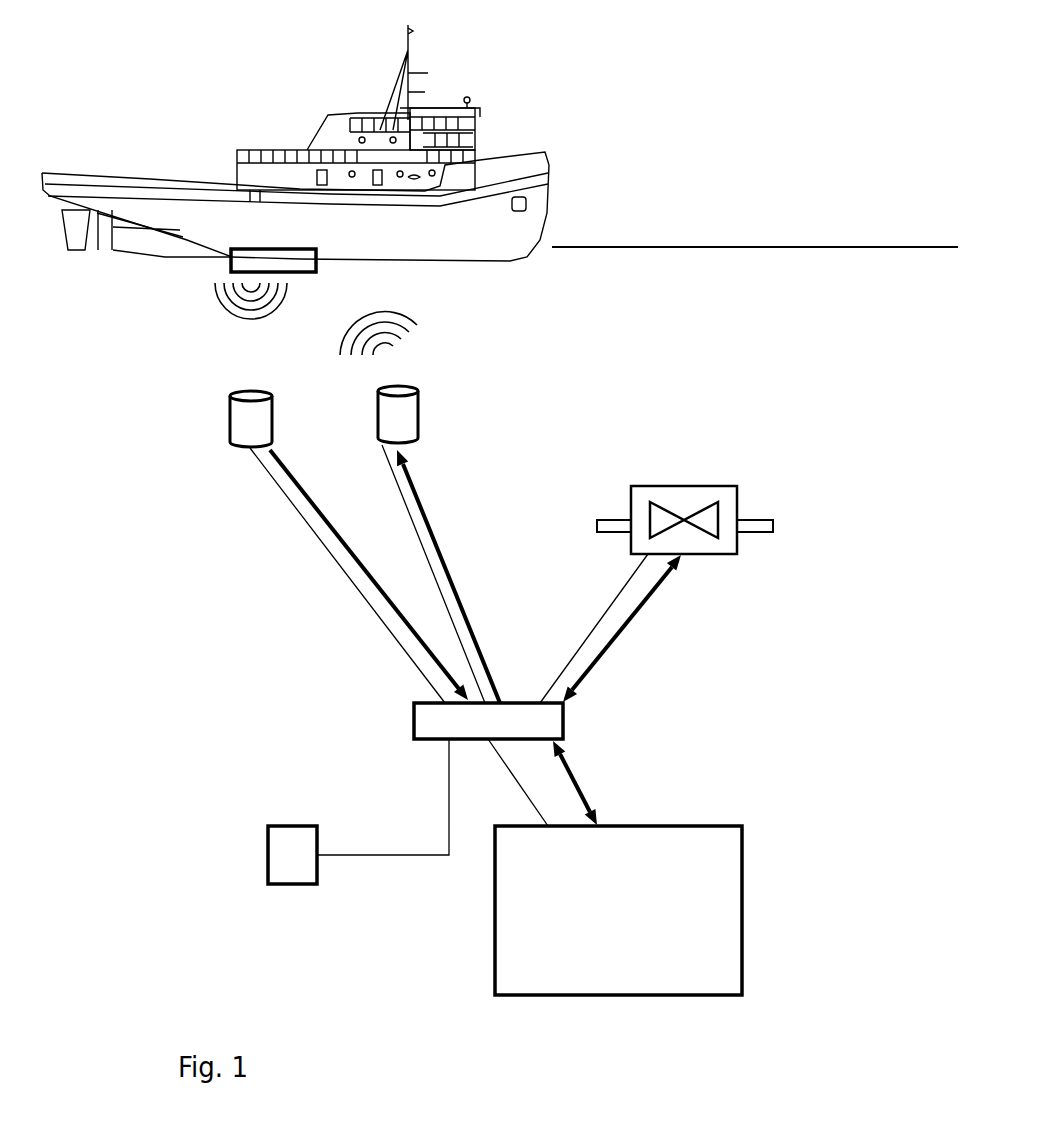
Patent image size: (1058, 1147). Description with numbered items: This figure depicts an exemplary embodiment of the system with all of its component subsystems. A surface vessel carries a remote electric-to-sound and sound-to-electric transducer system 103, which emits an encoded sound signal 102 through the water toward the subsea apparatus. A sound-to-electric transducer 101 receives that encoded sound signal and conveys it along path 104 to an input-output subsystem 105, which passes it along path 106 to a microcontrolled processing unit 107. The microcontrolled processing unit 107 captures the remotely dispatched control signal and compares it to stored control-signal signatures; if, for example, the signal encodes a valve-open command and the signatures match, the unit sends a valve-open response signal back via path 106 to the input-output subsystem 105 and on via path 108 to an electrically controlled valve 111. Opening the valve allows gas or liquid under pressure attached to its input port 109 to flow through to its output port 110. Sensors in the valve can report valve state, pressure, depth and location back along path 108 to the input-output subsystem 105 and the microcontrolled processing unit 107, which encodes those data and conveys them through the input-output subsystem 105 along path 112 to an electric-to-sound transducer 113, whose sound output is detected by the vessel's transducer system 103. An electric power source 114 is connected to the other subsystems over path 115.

The sound-to-electric transducer 101 is at (223, 419).
The acoustic signal 102 is at (316, 320).
The vessel's remote electric-to-sound and sound-to-electric transducer system 103 is at (298, 267).
The path 104 is at (369, 575).
The input-output subsystem 105 is at (488, 721).
The path 106 is at (592, 783).
The microcontrolled processing unit 107 is at (618, 910).
The path 108 is at (622, 628).
The input port 109 is at (606, 512).
The output port 110 is at (761, 513).
The electrically controlled valve 111 is at (684, 507).
The signal line to transmitter 112 is at (448, 576).
The electric-to-sound transducer 113 is at (421, 414).
The electric power source 114 is at (292, 874).
The path 115 is at (449, 650).